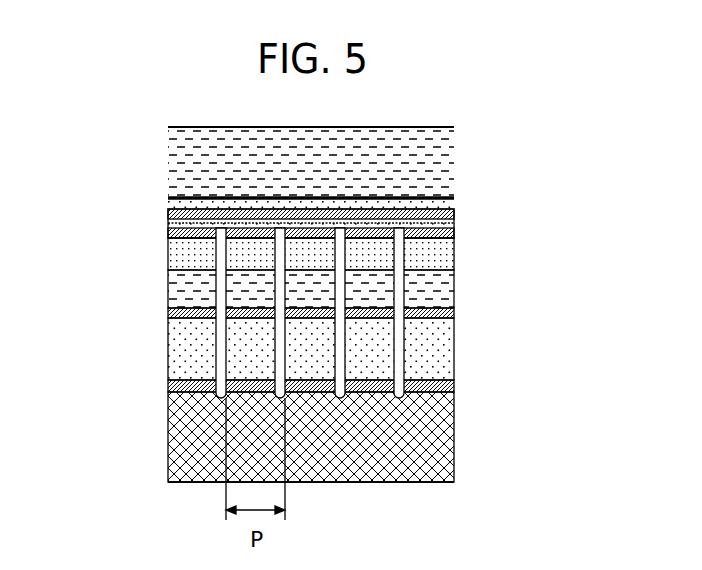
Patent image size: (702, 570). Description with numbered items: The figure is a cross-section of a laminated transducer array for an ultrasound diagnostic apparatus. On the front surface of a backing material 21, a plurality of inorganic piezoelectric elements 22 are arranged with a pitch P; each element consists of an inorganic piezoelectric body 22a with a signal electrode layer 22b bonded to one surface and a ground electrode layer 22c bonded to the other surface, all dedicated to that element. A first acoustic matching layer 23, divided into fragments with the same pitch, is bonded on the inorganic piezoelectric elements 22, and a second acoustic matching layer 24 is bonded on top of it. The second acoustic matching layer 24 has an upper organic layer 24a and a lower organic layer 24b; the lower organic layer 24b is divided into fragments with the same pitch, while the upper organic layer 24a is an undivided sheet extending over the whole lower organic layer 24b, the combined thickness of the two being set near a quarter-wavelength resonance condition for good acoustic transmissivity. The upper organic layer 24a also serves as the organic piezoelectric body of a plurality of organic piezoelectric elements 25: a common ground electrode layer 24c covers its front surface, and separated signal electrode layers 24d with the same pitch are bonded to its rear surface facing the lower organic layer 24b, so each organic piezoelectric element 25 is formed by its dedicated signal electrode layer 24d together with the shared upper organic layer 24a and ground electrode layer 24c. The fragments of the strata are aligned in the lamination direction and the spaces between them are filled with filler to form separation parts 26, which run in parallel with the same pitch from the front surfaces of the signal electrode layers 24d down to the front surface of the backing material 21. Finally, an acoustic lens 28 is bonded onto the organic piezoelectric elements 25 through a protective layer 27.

The backing material 21 is at (457, 430).
The inorganic piezoelectric element 22 is at (470, 352).
The inorganic piezoelectric body 22a is at (167, 350).
The signal electrode layer 22b is at (167, 385).
The ground electrode layer 22c is at (167, 313).
The first acoustic matching layer 23 is at (455, 290).
The second acoustic matching layer 24 is at (532, 205).
The upper organic layer 24a is at (168, 221).
The lower organic layer 24b is at (455, 252).
The ground electrode layer 24c is at (168, 213).
The signal electrode layer 24d is at (168, 232).
The organic piezoelectric element 25 is at (74, 180).
The separation part 26 is at (403, 360).
The protective layer 27 is at (457, 201).
The acoustic lens 28 is at (455, 145).